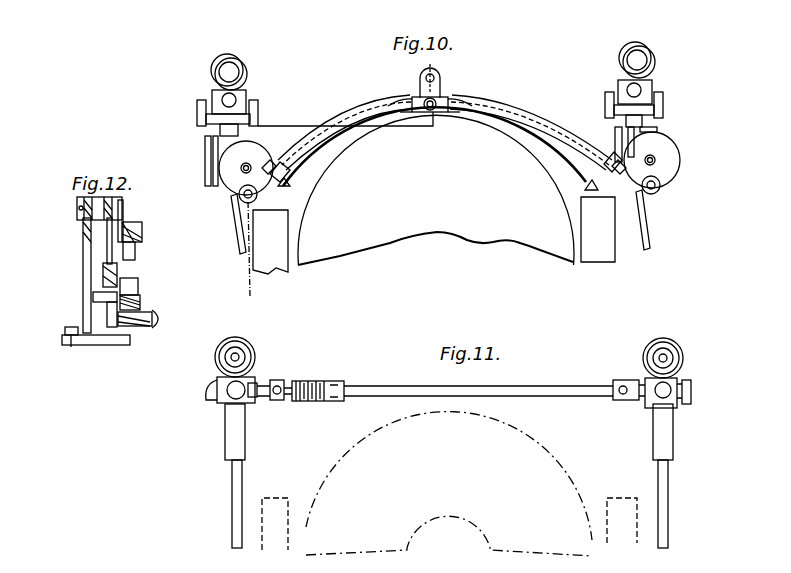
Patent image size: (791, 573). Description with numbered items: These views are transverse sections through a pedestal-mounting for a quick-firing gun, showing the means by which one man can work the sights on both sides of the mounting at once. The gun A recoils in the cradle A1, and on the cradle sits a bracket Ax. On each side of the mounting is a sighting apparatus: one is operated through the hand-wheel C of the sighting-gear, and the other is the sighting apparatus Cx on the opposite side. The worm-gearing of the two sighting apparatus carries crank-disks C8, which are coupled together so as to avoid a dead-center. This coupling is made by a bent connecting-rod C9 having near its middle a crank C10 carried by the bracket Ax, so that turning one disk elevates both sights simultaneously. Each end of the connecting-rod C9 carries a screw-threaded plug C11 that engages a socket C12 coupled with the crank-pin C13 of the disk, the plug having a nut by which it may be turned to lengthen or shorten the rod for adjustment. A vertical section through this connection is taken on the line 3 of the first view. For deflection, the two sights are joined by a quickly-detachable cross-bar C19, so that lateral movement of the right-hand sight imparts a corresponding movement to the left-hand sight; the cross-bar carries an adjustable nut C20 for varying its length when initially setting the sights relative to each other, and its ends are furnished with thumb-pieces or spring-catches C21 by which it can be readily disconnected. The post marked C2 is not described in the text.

In FIG. 10, the section line 3 3 is at (340, 181).
In FIG. 10, the gun A is at (434, 186).
In FIG. 11, the gun A is at (449, 484).
In FIG. 10, the cradle A1 is at (434, 235).
In FIG. 11, the cradle A1 is at (449, 524).
In FIG. 10, the bracket Ax is at (288, 178).
In FIG. 12, the bracket Ax is at (83, 240).
In FIG. 10, the hand-wheel of the sighting-gear C is at (430, 114).
In FIG. 11, the hand-wheel of the sighting-gear C is at (250, 345).
In FIG. 11, the post C2 is at (679, 412).
In FIG. 10, the crank-disk C8 is at (449, 163).
In FIG. 12, the crank-disk C8 is at (107, 275).
In FIG. 10, the connecting-rod C9 is at (288, 158).
In FIG. 12, the connecting-rod C9 is at (137, 252).
In FIG. 10, the crank C10 is at (424, 86).
In FIG. 12, the crank C10 is at (118, 208).
In FIG. 10, the screw-threaded plug C11 is at (445, 169).
In FIG. 10, the socket C12 is at (252, 203).
In FIG. 12, the socket C12 is at (140, 303).
In FIG. 10, the crank-pin C13 is at (232, 192).
In FIG. 12, the crank-pin C13 is at (160, 327).
In FIG. 11, the cross-bar C19 is at (478, 382).
In FIG. 11, the adjustable nut C20 is at (314, 379).
In FIG. 11, the spring-catch C21 is at (222, 400).
In FIG. 11, the sighting apparatus Cx is at (645, 356).